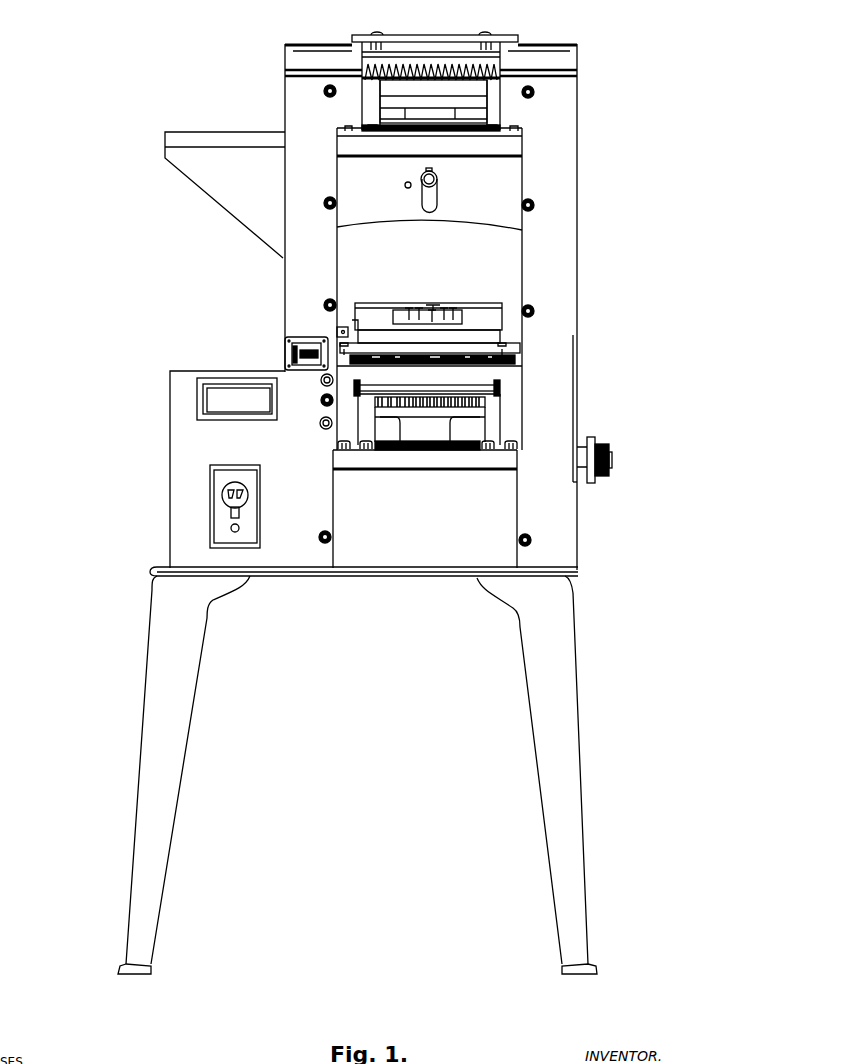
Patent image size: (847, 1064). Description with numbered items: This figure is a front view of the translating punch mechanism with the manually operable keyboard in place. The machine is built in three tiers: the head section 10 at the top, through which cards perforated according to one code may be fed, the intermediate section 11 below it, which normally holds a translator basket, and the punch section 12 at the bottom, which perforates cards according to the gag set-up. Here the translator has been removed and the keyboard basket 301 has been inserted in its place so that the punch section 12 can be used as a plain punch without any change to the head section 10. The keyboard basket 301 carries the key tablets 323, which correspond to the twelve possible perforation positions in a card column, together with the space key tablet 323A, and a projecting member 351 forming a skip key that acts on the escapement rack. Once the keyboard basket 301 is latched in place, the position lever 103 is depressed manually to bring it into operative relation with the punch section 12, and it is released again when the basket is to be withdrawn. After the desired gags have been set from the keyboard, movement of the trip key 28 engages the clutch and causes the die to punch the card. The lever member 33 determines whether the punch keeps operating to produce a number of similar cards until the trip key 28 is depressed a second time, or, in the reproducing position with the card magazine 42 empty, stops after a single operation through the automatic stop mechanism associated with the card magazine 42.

The head section 10 is at (84, 122).
The intermediate section 11 is at (158, 292).
The punch section 12 is at (94, 446).
The card magazine 42 is at (477, 121).
The lever member 33 is at (450, 199).
The projecting member 351 is at (352, 327).
The key tablets 323 is at (420, 306).
The key tablet 323A is at (433, 306).
The keyboard basket 301 is at (475, 303).
The position lever 103 is at (338, 330).
The trip key 28 is at (320, 380).